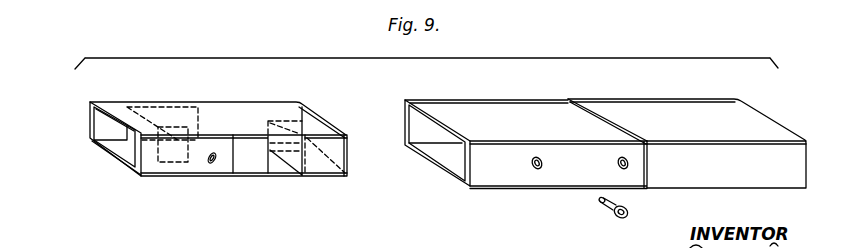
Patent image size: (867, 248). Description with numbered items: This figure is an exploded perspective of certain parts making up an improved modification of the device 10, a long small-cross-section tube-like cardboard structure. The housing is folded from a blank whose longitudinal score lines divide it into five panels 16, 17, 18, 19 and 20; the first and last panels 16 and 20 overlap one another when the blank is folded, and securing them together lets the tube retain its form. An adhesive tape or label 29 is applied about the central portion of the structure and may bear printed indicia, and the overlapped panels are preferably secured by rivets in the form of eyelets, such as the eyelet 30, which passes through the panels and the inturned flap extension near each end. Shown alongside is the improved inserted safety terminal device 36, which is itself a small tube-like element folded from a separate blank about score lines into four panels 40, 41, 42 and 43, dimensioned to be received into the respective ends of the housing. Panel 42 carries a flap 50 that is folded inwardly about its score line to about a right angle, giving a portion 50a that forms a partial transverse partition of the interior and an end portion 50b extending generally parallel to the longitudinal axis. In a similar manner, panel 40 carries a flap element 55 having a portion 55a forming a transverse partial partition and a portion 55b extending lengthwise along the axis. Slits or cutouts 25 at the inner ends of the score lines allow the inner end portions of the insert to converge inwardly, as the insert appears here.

The device 10 is at (600, 97).
The first panel 16 is at (543, 177).
The panel 17 is at (514, 110).
The panel 18 is at (411, 113).
The panel 19 is at (445, 163).
The last panel 20 is at (465, 165).
The slits or cutouts 25 is at (348, 135).
The adhesive tape or label 29 is at (657, 102).
The eyelet 30 is at (599, 217).
The inserted safety terminal device 36 is at (192, 101).
The panel 40 is at (223, 167).
The panel 41 is at (231, 108).
The panel 42 is at (99, 124).
The panel 43 is at (125, 158).
The flap 50 is at (150, 119).
The portion of flap element 50a is at (131, 141).
The end portion of flap element 50b is at (171, 163).
The flap element 55 is at (279, 122).
The portion of flap element 55a is at (275, 152).
The portion of flap element 55b is at (306, 105).